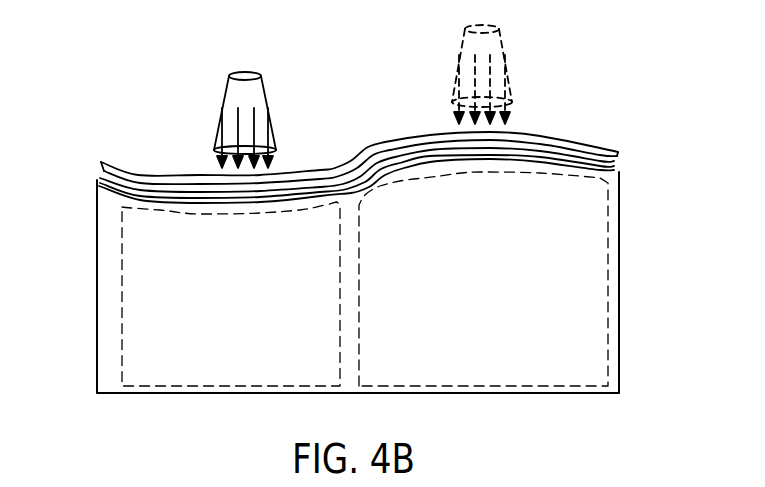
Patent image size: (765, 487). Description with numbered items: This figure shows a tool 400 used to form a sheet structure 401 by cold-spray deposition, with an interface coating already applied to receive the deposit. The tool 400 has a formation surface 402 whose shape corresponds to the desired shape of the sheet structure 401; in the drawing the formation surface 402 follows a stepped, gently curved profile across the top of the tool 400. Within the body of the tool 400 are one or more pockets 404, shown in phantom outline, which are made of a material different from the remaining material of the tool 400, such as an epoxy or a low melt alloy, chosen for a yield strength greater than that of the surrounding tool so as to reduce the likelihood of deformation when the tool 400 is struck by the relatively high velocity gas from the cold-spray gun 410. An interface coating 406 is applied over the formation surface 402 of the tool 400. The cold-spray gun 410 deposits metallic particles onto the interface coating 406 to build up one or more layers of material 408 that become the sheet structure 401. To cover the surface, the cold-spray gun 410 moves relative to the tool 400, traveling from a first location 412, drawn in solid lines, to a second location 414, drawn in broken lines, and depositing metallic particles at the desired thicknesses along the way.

The tool 400 is at (96, 263).
The sheet structure 401 is at (584, 143).
The formation surface 402 is at (100, 178).
The pockets 404 is at (396, 372).
The interface coating 406 is at (621, 165).
The layer of material 408 is at (536, 135).
The cold-spray gun 410 is at (262, 82).
The first location 412 is at (272, 118).
The second location 414 is at (513, 50).